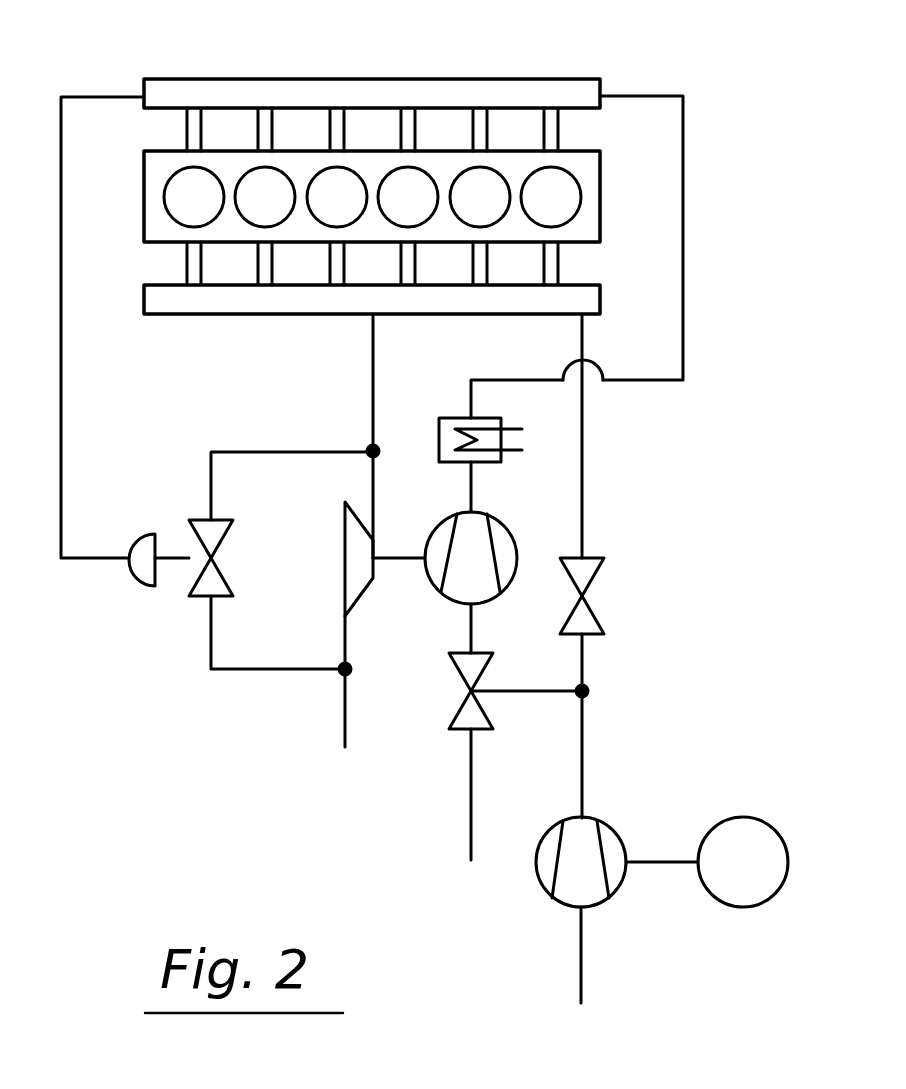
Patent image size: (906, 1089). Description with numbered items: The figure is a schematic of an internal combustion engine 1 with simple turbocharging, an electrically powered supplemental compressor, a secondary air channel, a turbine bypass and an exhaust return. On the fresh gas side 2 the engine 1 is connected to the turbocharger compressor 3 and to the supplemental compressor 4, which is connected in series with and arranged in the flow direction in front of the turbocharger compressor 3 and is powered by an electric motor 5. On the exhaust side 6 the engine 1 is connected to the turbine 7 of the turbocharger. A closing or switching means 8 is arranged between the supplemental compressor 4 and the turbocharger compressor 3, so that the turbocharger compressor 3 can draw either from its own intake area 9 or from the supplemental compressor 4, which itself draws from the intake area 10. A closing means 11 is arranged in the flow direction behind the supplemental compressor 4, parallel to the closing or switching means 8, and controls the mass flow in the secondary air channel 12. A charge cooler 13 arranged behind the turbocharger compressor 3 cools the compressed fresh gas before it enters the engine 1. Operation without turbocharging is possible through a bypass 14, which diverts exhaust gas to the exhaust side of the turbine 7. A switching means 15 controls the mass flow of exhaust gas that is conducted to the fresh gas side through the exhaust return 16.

The internal combustion engine 1 is at (592, 186).
The fresh gas side 2 is at (568, 80).
The turbocharger compressor 3 is at (476, 552).
The supplemental compressor 4 is at (588, 853).
The electric motor 5 is at (760, 833).
The exhaust side 6 is at (325, 314).
The turbine 7 is at (350, 563).
The closing or switching means 8 is at (460, 690).
The intake area 9 is at (471, 820).
The intake area 10 is at (581, 977).
The closing means 11 is at (583, 597).
The secondary air channel 12 is at (582, 512).
The charge cooler 13 is at (473, 428).
The bypass 14 is at (298, 450).
The switching means 15 is at (205, 592).
The exhaust return 16 is at (87, 556).